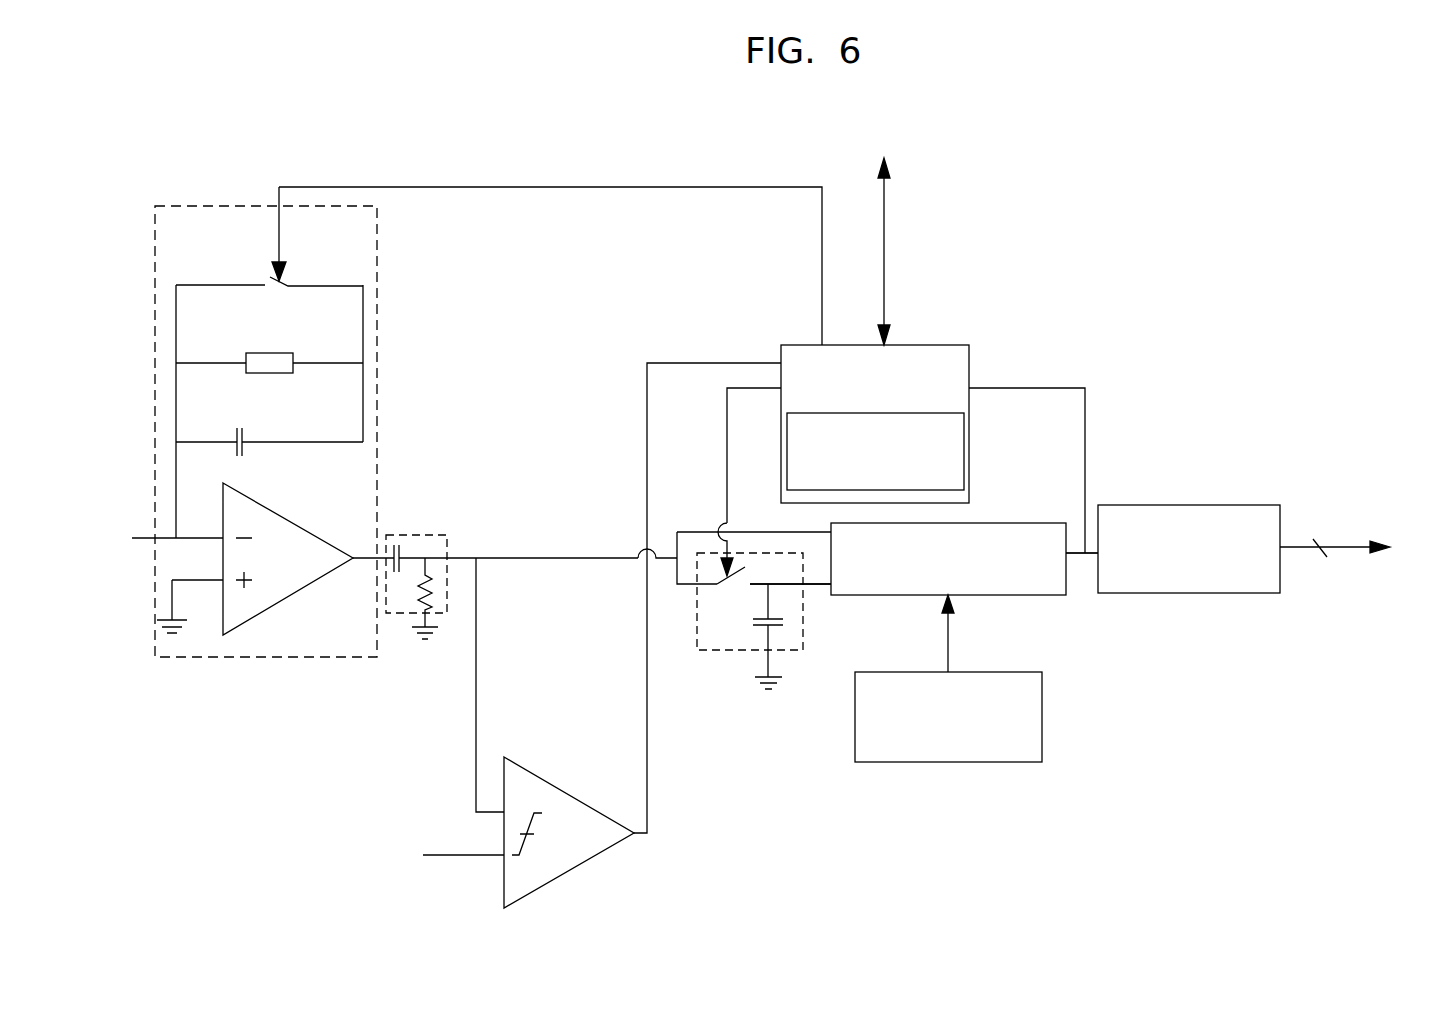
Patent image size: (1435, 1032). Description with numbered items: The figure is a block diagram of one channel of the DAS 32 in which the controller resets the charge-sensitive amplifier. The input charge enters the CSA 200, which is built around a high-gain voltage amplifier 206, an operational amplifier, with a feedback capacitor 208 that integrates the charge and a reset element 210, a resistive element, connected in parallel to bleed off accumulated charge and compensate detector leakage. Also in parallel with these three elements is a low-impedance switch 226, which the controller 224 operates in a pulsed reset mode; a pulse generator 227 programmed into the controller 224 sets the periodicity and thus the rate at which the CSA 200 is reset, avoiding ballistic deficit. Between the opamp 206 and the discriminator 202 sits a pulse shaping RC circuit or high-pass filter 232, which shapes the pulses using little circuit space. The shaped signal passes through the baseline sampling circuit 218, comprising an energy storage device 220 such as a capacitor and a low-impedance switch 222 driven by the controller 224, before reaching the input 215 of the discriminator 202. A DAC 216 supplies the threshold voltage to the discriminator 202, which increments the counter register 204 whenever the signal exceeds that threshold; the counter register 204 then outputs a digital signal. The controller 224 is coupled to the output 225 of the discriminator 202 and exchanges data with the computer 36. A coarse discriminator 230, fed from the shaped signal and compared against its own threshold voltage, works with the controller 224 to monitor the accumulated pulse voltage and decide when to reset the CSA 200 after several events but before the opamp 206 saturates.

The DAS 32 is at (1112, 352).
The computer 36 is at (878, 236).
The charge-sensitive amplifier 200 is at (377, 280).
The discriminator 202 is at (972, 523).
The counter register 204 is at (1188, 505).
The high-gain voltage amplifier 206 is at (287, 597).
The feedback capacitor 208 is at (236, 440).
The reset element 210 is at (268, 352).
The input of discriminator 215 is at (818, 585).
The digital-analog converter 216 is at (1042, 715).
The baseline sampling circuit 218 is at (753, 652).
The energy storage device 220 is at (785, 623).
The low-impedance switch 222 is at (732, 585).
The controller 224 is at (924, 345).
The output of discriminator 225 is at (1066, 562).
The low-impedance switch 226 is at (272, 283).
The pulse generator 227 is at (964, 424).
The coarse discriminator 230 is at (568, 871).
The high-pass filter 232 is at (418, 535).